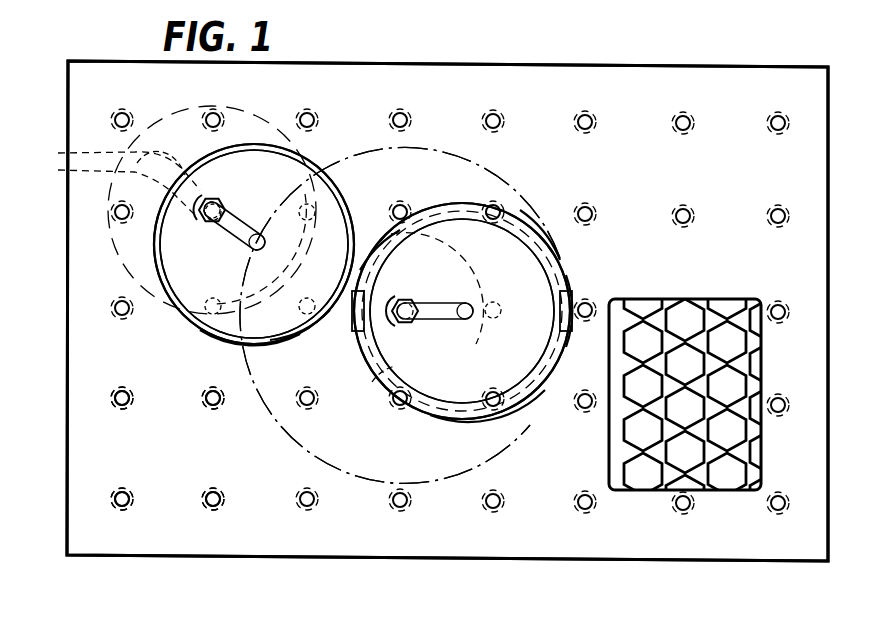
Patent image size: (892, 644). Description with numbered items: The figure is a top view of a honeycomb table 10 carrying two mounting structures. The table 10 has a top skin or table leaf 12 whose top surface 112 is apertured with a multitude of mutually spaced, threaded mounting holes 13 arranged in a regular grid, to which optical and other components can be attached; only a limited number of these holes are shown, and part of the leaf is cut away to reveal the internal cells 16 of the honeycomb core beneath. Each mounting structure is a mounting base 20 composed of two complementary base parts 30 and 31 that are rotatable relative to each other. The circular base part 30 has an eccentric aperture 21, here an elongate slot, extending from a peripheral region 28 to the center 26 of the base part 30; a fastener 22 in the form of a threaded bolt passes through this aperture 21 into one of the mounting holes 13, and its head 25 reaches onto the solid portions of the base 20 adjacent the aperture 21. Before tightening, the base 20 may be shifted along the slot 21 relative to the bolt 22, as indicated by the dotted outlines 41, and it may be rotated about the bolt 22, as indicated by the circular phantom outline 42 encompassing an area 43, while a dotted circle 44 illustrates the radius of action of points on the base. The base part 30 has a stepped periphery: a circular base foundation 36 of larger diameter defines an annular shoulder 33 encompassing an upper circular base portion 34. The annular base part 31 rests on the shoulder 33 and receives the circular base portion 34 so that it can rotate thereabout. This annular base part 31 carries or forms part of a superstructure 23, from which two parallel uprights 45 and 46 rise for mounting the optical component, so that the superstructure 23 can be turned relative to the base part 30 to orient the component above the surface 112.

The honeycomb table 10 is at (724, 96).
The table leaf 12 is at (88, 106).
The mounting holes 13 is at (770, 130).
The top surface 112 is at (254, 470).
The internal cells 16 is at (758, 332).
The mounting base 20 is at (190, 326).
The eccentric aperture 21 is at (262, 241).
The fastener 22 is at (208, 230).
The superstructure 23 is at (458, 196).
The head 25 is at (224, 203).
The center 26 is at (253, 258).
The peripheral region 28 is at (206, 165).
The base part 30 is at (334, 273).
The annular base part 31 is at (445, 420).
The shoulder 33 is at (338, 194).
The circular base portion 34 is at (233, 345).
The circular base foundation 36 is at (286, 349).
The dotted outlines 41 is at (60, 157).
The circular phantom outline 42 is at (452, 145).
The area 43 is at (370, 452).
The dotted circle 44 is at (394, 232).
The upright 45 is at (352, 328).
The upright 46 is at (568, 298).